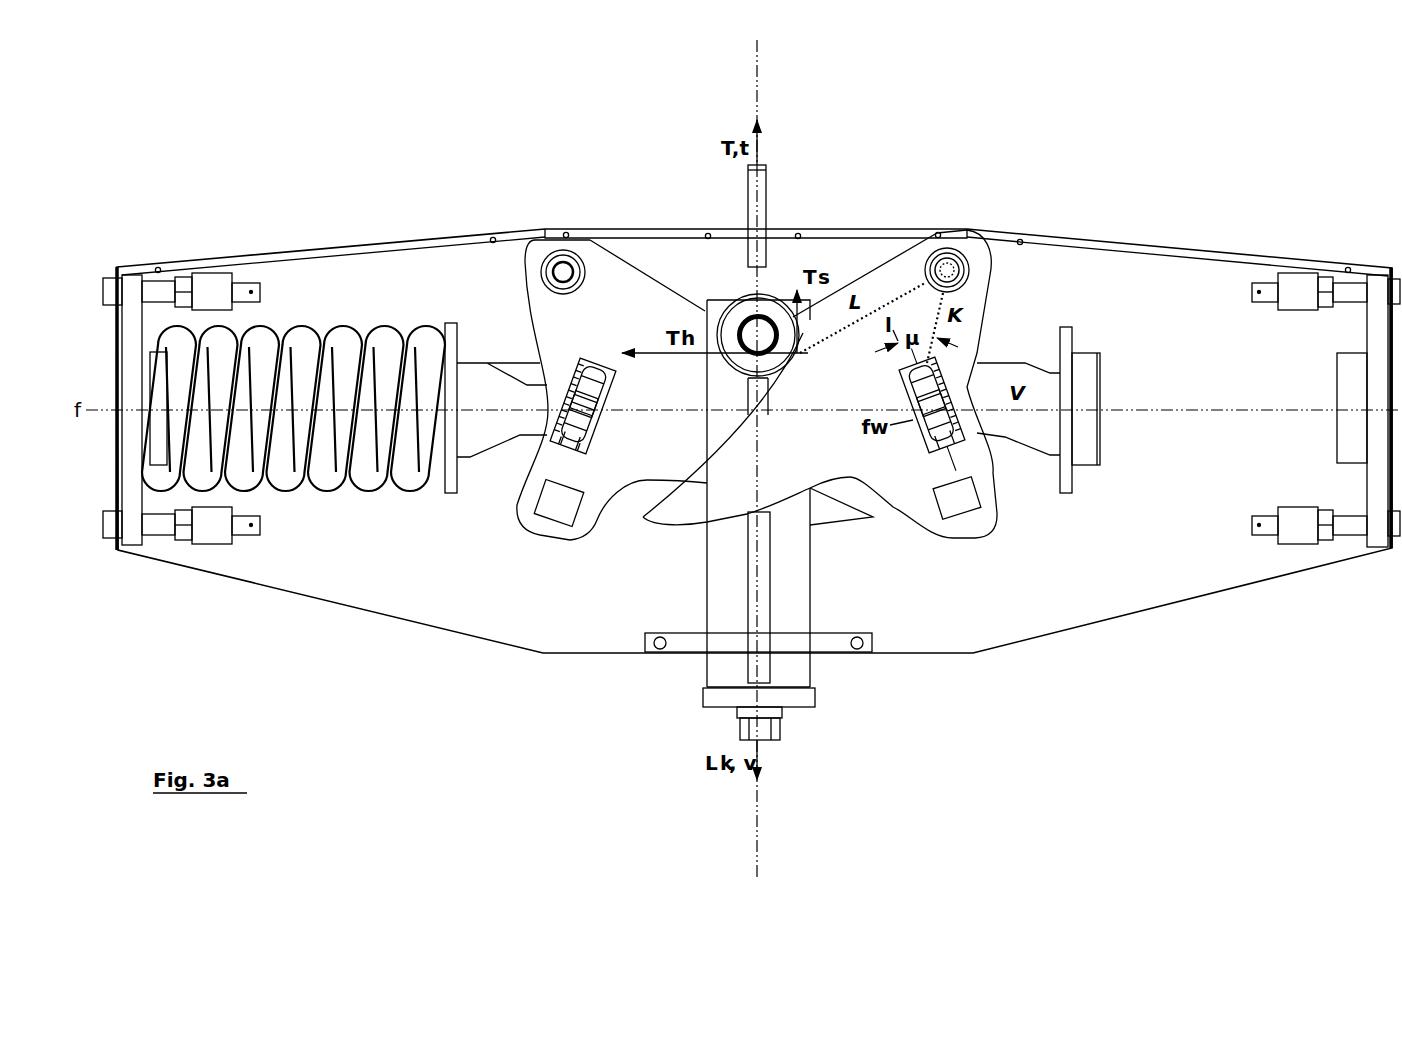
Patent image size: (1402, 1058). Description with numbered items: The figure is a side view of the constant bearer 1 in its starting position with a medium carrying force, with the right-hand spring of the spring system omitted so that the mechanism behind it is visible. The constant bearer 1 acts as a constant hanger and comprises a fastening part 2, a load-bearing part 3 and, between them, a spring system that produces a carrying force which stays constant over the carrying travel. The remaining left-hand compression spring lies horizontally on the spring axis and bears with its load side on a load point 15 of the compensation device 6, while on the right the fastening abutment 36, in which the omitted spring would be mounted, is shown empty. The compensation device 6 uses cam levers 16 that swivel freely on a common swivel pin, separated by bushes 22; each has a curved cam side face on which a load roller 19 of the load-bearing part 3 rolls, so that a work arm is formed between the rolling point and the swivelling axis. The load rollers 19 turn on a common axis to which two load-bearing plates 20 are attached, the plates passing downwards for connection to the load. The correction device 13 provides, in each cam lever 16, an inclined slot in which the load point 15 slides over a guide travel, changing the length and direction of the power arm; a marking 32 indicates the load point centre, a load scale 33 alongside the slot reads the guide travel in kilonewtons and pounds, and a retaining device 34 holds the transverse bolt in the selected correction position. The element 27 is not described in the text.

The constant bearer 1 is at (1073, 222).
The fastening part 2 is at (1203, 270).
The load-bearing part 3 is at (817, 715).
The compensation device 6 is at (870, 487).
The correction device 13 is at (607, 433).
The load point 15 is at (608, 403).
The cam lever 16 is at (683, 512).
The load roller 19 is at (733, 307).
The load-bearing plate 20 is at (710, 599).
The bush 22 is at (760, 577).
The stop 27 is at (1090, 362).
The marking 32 is at (603, 412).
The load scale 33 is at (578, 382).
The retaining device 34 is at (543, 527).
The fastening abutment 36 is at (1343, 403).